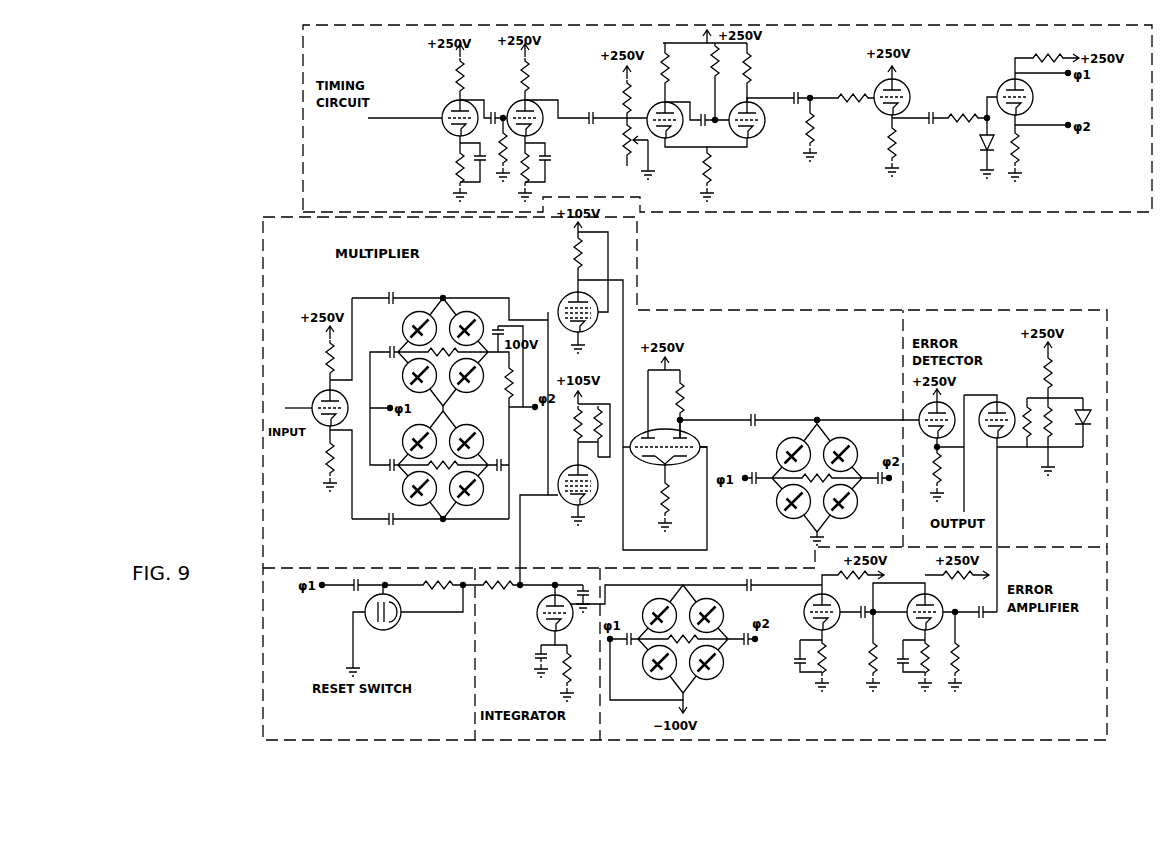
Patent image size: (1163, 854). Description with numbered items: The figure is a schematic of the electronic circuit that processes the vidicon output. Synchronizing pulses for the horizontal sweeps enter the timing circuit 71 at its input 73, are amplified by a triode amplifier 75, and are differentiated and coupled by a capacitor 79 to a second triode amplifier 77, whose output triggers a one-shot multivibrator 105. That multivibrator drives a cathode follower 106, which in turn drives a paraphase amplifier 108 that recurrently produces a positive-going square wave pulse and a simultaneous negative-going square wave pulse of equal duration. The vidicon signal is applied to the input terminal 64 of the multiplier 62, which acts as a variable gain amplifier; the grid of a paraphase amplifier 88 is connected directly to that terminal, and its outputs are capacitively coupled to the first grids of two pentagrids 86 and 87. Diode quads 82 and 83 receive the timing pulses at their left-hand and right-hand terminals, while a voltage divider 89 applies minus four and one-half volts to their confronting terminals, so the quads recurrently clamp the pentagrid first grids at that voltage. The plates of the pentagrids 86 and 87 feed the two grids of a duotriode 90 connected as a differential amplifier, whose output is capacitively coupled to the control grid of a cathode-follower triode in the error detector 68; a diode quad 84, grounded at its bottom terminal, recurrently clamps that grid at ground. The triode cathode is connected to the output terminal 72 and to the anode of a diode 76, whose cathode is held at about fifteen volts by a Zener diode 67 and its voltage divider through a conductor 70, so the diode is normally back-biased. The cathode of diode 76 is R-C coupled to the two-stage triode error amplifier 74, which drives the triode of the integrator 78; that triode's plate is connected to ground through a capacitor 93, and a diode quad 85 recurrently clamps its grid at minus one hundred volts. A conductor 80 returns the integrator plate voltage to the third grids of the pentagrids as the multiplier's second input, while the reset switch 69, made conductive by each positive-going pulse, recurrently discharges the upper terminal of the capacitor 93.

The timing circuit 71 is at (300, 135).
The input 73 is at (367, 120).
The triode amplifier 75 is at (456, 86).
The triode amplifier 77 is at (530, 88).
The capacitor 79 is at (493, 108).
The one-shot multivibrator 105 is at (752, 78).
The cathode follower 106 is at (905, 88).
The paraphase amplifier 108 is at (1033, 97).
The multiplier 62 is at (260, 250).
The input terminal 64 is at (290, 408).
The paraphase amplifier 88 is at (323, 430).
The diode quad 82 is at (404, 348).
The diode quad 83 is at (404, 476).
The voltage divider 89 is at (506, 393).
The pentagrid 86 is at (567, 297).
The pentagrid 87 is at (588, 505).
The duotriode 90 is at (702, 441).
The diode quad 84 is at (803, 516).
The error detector 68 is at (1018, 312).
The diode 76 is at (1003, 403).
The output terminal 72 is at (966, 506).
The conductor 70 is at (1012, 452).
The Zener diode 67 is at (1087, 448).
The conductor 80 is at (520, 562).
The capacitor 93 is at (586, 582).
The diode quad 85 is at (700, 686).
The reset switch 69 is at (266, 700).
The integrator 78 is at (514, 744).
The error amplifier 74 is at (1070, 742).